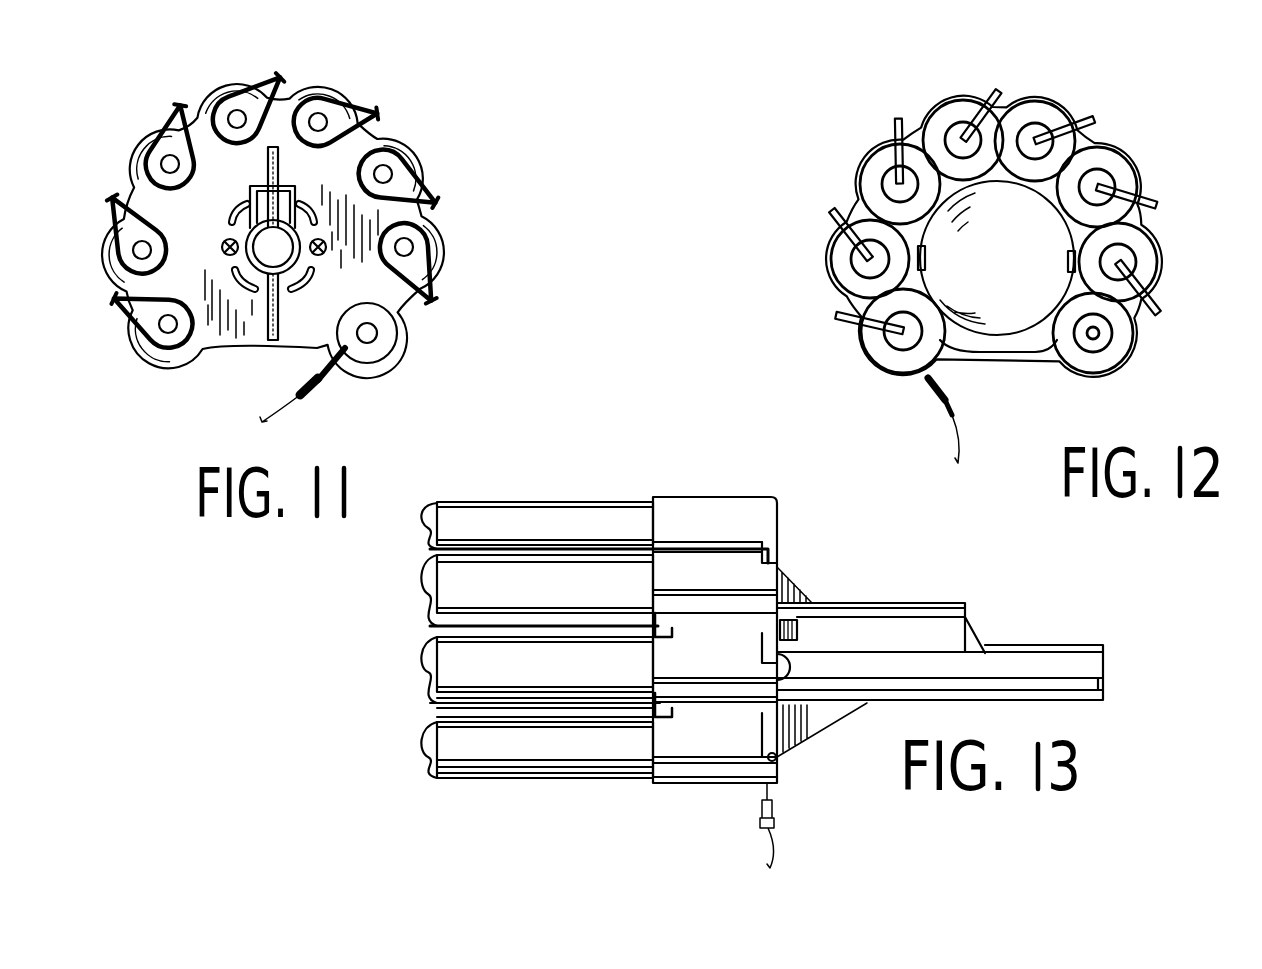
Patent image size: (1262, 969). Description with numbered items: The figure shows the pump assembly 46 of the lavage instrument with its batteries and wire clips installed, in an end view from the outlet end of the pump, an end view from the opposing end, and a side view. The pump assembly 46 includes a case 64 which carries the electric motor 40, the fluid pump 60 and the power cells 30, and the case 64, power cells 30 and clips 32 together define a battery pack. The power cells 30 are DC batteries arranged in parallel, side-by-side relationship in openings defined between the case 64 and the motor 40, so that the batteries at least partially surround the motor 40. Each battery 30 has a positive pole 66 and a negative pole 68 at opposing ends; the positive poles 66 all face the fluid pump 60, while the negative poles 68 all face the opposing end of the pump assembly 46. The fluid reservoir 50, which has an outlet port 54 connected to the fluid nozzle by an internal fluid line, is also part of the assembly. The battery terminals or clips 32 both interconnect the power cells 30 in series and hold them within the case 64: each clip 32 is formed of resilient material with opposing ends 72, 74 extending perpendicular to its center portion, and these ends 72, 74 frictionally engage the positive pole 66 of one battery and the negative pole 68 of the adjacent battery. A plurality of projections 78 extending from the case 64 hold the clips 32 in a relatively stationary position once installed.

In FIG. 11, the power cells 30 is at (410, 160).
In FIG. 12, the power cells 30 is at (840, 252).
In FIG. 13, the power cells 30 is at (495, 527).
In FIG. 11, the battery terminals or clips 32 is at (128, 327).
In FIG. 12, the battery terminals or clips 32 is at (965, 100).
In FIG. 13, the battery terminals or clips 32 is at (580, 542).
In FIG. 12, the motor 40 is at (1022, 275).
In FIG. 12, the pump assembly 46 is at (771, 248).
In FIG. 13, the pump assembly 46 is at (357, 637).
In FIG. 13, the fluid reservoir 50 is at (1032, 662).
In FIG. 11, the outlet port 54 is at (272, 255).
In FIG. 13, the fluid pump 60 is at (888, 603).
In FIG. 11, the case 64 is at (129, 172).
In FIG. 12, the case 64 is at (1042, 100).
In FIG. 13, the case 64 is at (705, 497).
In FIG. 11, the positive pole 66 is at (105, 240).
In FIG. 12, the negative pole 68 is at (935, 122).
In FIG. 12, the end 72 is at (1128, 262).
In FIG. 11, the end 74 is at (158, 138).
In FIG. 11, the projections 78 is at (278, 84).
In FIG. 12, the projections 78 is at (895, 118).
In FIG. 13, the projections 78 is at (660, 710).